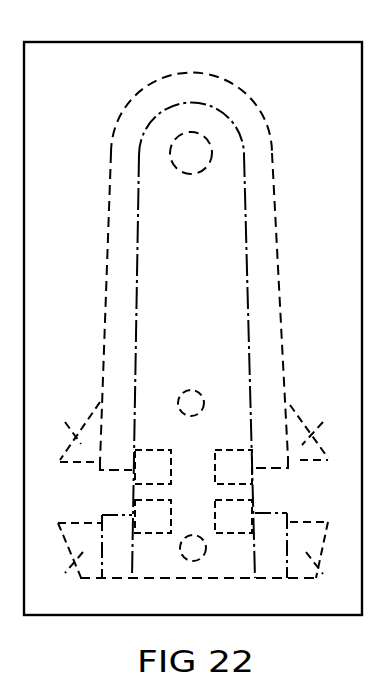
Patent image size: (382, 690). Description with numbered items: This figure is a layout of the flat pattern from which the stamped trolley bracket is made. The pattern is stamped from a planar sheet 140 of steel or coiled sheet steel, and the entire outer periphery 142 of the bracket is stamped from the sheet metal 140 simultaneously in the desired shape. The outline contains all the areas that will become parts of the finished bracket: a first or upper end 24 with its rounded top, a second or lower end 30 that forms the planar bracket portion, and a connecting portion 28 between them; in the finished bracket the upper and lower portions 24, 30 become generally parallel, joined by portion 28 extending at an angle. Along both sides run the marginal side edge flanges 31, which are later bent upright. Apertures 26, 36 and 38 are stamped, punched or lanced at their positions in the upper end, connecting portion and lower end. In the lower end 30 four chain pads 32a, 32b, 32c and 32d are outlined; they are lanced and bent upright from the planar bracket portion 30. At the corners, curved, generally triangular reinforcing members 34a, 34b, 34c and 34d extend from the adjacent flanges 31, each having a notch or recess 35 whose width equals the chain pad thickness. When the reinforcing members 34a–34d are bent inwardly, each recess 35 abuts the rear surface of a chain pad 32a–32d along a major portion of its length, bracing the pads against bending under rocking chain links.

The planar sheet 140 is at (332, 67).
The outer periphery 142 is at (263, 140).
The marginal side edge flanges 31 is at (268, 270).
The first or upper end 24 is at (177, 235).
The connecting portion 28 is at (177, 335).
The aperture 26 is at (205, 175).
The aperture 36 is at (201, 391).
The aperture 38 is at (203, 555).
The second or lower end 30 is at (206, 465).
The chain pad 32a is at (248, 481).
The chain pad 32b is at (168, 481).
The chain pad 32c is at (168, 530).
The chain pad 32d is at (248, 530).
The reinforcing member 34a is at (318, 429).
The reinforcing member 34b is at (71, 430).
The reinforcing member 34c is at (61, 561).
The reinforcing member 34d is at (330, 561).
The notch or recess 35 is at (80, 463).